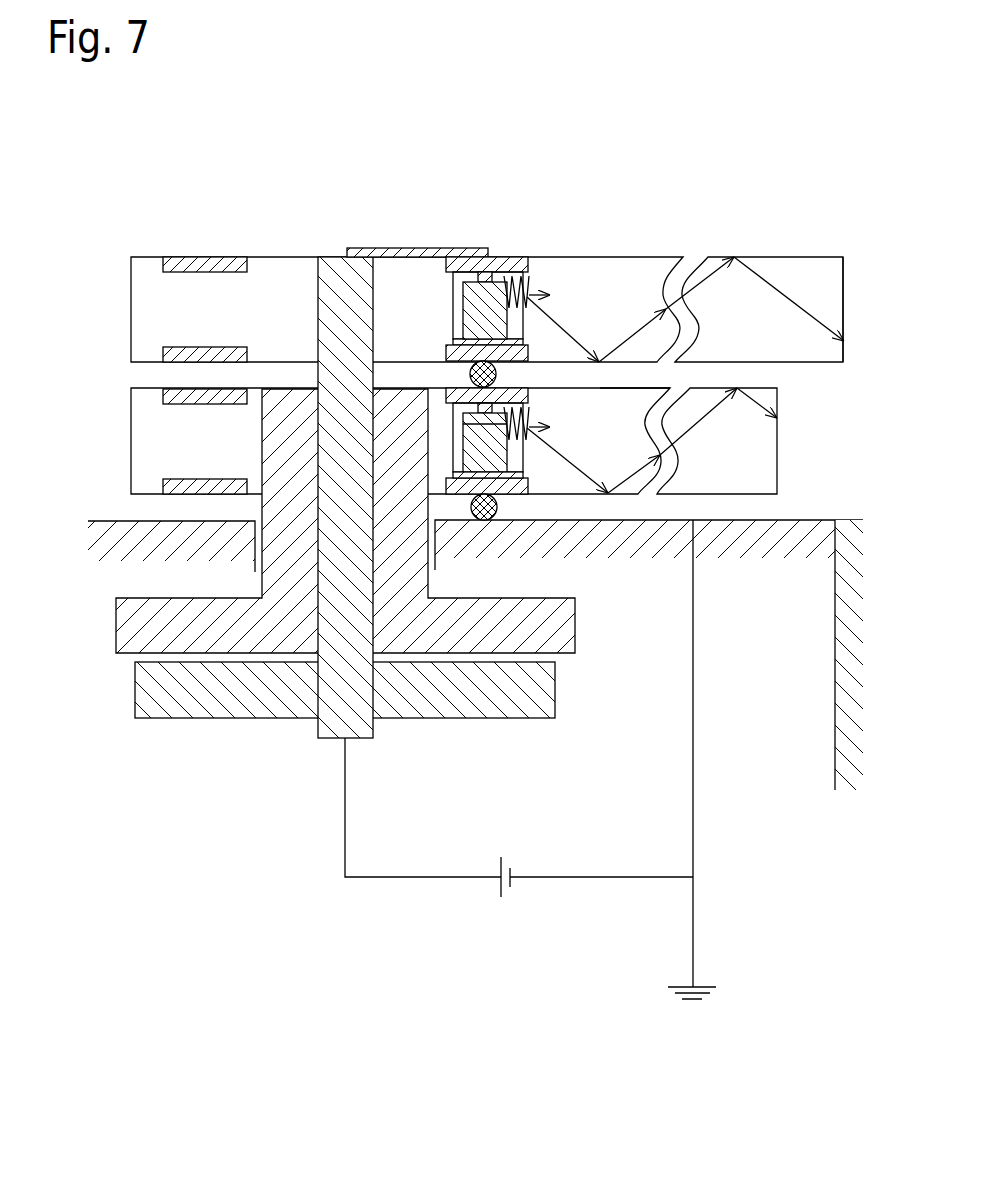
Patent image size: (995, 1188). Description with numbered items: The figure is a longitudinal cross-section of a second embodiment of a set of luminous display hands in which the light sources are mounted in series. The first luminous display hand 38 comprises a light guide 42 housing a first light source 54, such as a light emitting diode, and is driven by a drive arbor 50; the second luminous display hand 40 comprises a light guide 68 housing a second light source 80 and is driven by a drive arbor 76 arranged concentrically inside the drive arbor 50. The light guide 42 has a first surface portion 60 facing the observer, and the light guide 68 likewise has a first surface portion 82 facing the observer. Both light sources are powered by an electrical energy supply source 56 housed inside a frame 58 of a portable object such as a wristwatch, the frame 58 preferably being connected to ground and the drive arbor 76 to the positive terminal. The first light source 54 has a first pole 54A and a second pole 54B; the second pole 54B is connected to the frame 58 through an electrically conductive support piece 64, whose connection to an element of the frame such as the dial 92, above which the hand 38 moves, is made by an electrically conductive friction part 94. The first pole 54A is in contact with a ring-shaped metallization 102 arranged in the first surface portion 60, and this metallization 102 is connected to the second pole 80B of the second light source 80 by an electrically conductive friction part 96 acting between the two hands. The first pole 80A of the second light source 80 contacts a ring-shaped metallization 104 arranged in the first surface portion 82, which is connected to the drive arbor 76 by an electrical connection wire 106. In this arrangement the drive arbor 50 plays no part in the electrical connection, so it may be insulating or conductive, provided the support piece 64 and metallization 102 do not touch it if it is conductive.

The first luminous display hand 38 is at (727, 450).
The second luminous display hand 40 is at (648, 295).
The light guide 42 is at (130, 465).
The drive arbor 50 is at (145, 614).
The first light source 54 is at (496, 455).
The first pole 54A is at (630, 392).
The second pole 54B is at (458, 482).
The electrical energy supply source 56 is at (520, 907).
The frame 58 is at (850, 725).
The first surface portion 60 is at (600, 360).
The electrically conductive support piece 64 is at (513, 489).
The light guide 68 is at (130, 336).
The drive arbor 76 is at (333, 720).
The second light source 80 is at (482, 313).
The first pole 80A is at (480, 281).
The second pole 80B is at (457, 336).
The first surface portion 82 is at (787, 259).
The dial 92 is at (133, 526).
The electrically conductive friction part 94 is at (483, 512).
The electrically conductive friction part 96 is at (530, 357).
The ring-shaped metallization 102 is at (455, 392).
The ring-shaped metallization 104 is at (472, 260).
The electrical connection wire 106 is at (360, 248).